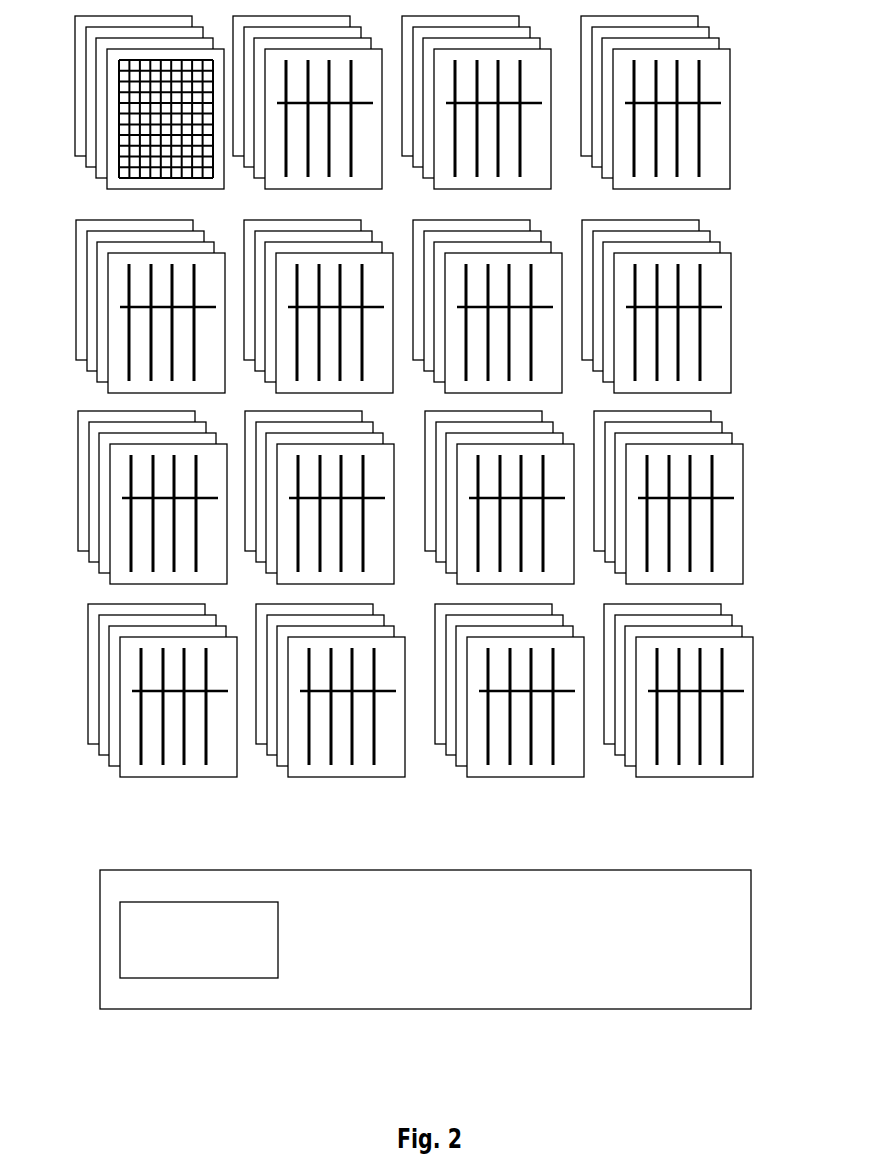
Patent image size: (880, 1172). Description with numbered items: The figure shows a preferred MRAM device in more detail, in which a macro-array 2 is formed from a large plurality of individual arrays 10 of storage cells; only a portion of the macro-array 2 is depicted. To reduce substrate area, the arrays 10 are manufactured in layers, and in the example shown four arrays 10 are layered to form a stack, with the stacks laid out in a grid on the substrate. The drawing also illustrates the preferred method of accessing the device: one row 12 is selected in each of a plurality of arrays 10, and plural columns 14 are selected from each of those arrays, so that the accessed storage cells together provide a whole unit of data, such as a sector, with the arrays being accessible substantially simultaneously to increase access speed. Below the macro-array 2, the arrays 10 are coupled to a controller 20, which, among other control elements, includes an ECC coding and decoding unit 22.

The macro-array 2 is at (410, 418).
The array 10 is at (426, 418).
The row 12 is at (721, 102).
The columns 14 is at (699, 59).
The controller 20 is at (425, 963).
The ECC coding and decoding unit 22 is at (278, 932).